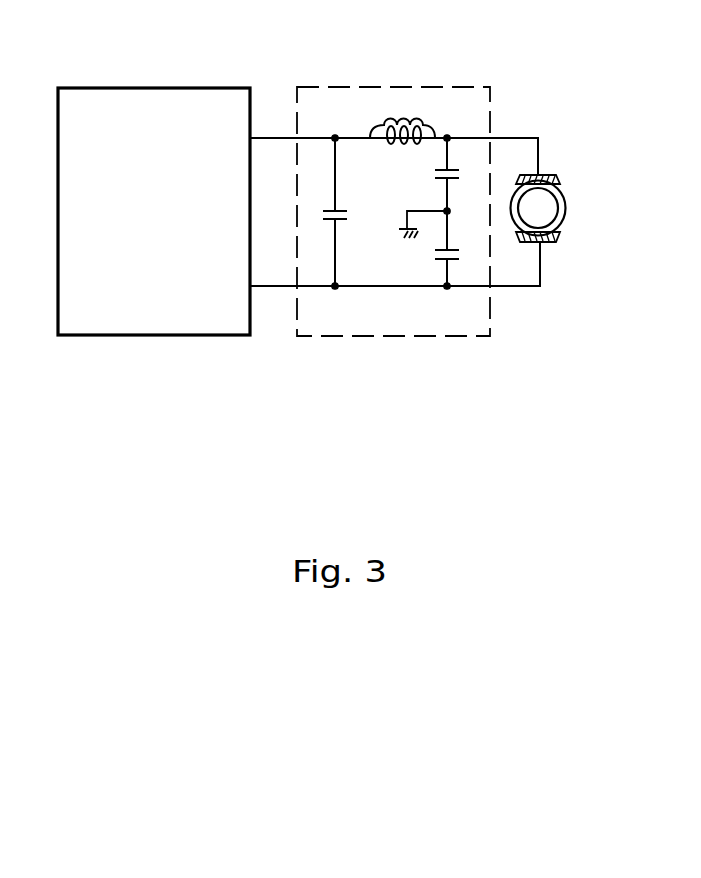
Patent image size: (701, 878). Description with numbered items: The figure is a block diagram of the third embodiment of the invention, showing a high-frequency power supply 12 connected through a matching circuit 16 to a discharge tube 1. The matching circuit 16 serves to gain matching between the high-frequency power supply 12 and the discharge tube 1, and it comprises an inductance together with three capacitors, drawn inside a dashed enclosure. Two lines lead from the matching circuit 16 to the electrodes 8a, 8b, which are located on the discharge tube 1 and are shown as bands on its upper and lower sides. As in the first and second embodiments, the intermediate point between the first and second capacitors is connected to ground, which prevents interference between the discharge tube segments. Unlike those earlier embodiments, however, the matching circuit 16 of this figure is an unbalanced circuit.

The high-frequency power supply 12 is at (148, 88).
The matching circuit 16 is at (403, 87).
The discharge tube 1 is at (567, 208).
The electrode 8a is at (553, 177).
The electrode 8b is at (553, 242).